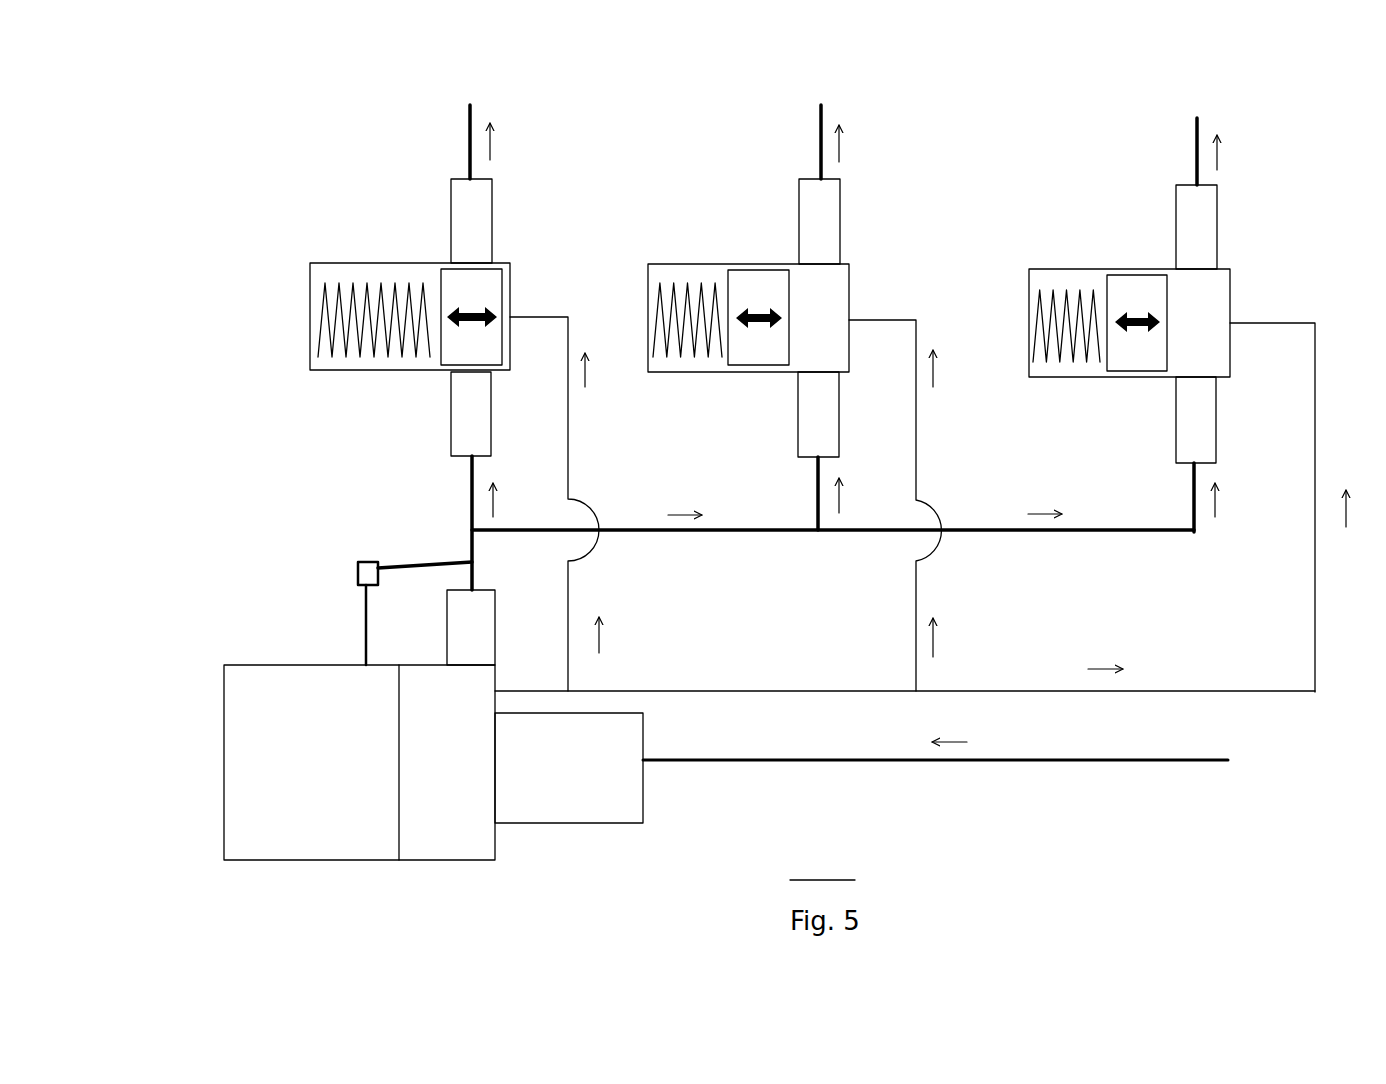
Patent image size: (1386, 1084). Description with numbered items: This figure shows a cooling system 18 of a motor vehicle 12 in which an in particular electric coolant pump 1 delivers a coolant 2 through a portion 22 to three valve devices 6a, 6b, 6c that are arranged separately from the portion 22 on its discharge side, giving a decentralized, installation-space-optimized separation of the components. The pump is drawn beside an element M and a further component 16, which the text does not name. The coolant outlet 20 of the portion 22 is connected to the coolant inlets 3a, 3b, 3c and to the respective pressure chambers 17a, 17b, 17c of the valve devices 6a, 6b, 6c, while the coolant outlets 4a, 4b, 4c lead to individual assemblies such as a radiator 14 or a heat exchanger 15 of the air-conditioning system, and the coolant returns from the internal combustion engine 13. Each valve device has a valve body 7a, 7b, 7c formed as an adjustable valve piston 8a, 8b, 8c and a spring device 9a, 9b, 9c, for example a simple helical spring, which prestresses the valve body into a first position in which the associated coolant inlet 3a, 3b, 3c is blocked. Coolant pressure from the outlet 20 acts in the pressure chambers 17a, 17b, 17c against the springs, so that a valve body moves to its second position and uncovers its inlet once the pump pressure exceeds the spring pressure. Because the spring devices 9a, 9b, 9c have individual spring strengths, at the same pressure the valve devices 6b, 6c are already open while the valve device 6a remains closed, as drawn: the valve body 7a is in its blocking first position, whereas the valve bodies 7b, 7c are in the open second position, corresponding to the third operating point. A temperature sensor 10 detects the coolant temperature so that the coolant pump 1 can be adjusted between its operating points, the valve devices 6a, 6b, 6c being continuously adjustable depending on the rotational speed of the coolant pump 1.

The coolant pump 1 is at (208, 172).
The coolant 2 is at (727, 665).
The coolant inlet 3a is at (468, 460).
The coolant inlet 3b is at (815, 462).
The coolant inlet 3c is at (1190, 468).
The coolant outlet 4a is at (466, 176).
The coolant outlet 4b is at (816, 172).
The coolant outlet 4c is at (1190, 180).
The valve device 6a is at (502, 260).
The valve device 6b is at (852, 258).
The valve device 6c is at (1232, 256).
The valve body 7a is at (462, 285).
The valve body 7b is at (752, 285).
The valve body 7c is at (1142, 290).
The valve piston 8a is at (448, 260).
The valve piston 8b is at (759, 251).
The valve piston 8c is at (1148, 274).
The spring device 9a is at (347, 293).
The spring device 9b is at (691, 298).
The spring device 9c is at (1062, 300).
The temperature sensor 10 is at (470, 560).
The motor vehicle 12 is at (1035, 138).
The internal combustion engine 13 is at (1240, 95).
The radiator 14 is at (878, 83).
The heat exchanger 15 is at (1278, 77).
The tank 16 is at (655, 766).
The pressure chamber 17a is at (508, 291).
The pressure chamber 17b is at (828, 297).
The pressure chamber 17c is at (1216, 303).
The cooling system 18 is at (1140, 764).
The coolant outlet 20 is at (482, 580).
The portion 22 is at (309, 652).
The motor M is at (362, 562).